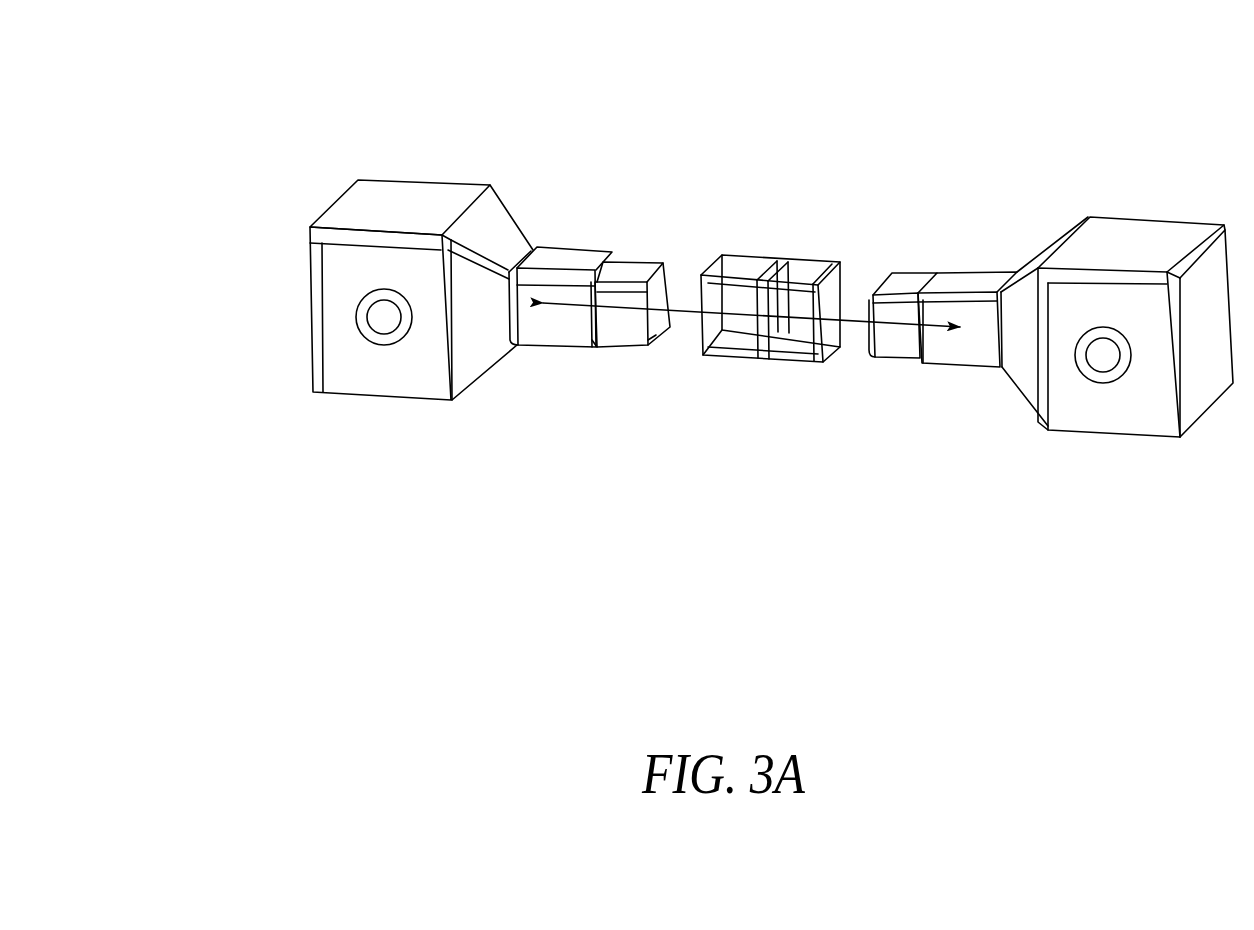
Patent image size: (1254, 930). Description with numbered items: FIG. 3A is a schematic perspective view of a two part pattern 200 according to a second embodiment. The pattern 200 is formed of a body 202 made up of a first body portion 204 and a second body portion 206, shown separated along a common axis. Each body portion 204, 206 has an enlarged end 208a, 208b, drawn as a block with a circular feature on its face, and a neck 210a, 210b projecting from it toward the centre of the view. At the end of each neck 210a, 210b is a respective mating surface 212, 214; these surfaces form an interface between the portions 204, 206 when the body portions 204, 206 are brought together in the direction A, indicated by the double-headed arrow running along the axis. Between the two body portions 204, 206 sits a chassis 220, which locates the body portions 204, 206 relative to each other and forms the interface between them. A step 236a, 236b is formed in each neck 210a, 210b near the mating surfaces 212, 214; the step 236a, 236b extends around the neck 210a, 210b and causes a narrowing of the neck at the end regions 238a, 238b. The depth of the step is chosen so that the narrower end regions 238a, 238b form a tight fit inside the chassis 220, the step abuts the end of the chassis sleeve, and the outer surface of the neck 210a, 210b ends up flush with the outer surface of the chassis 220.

The two part pattern 200 is at (328, 69).
The body 202 is at (763, 256).
The first body portion 204 is at (1117, 327).
The second body portion 206 is at (498, 243).
The enlarged end 208a is at (1170, 230).
The enlarged end 208b is at (408, 190).
The neck 210a is at (975, 283).
The neck 210b is at (568, 262).
The mating surface 212 is at (875, 355).
The mating surface 214 is at (668, 340).
The chassis 220 is at (802, 275).
The step 236a is at (913, 362).
The step 236b is at (600, 347).
The end region 238a is at (900, 290).
The end region 238b is at (632, 275).
The direction A is at (688, 338).